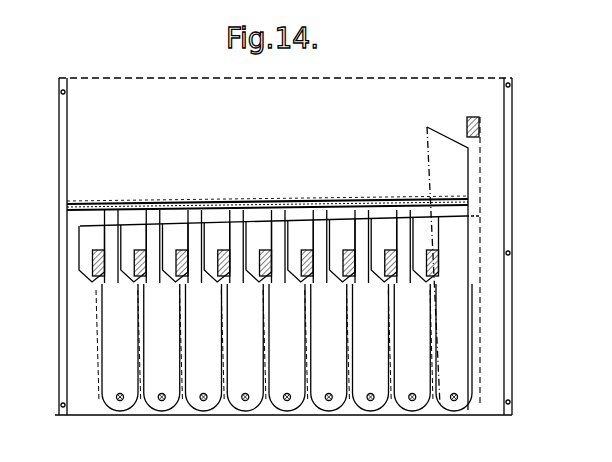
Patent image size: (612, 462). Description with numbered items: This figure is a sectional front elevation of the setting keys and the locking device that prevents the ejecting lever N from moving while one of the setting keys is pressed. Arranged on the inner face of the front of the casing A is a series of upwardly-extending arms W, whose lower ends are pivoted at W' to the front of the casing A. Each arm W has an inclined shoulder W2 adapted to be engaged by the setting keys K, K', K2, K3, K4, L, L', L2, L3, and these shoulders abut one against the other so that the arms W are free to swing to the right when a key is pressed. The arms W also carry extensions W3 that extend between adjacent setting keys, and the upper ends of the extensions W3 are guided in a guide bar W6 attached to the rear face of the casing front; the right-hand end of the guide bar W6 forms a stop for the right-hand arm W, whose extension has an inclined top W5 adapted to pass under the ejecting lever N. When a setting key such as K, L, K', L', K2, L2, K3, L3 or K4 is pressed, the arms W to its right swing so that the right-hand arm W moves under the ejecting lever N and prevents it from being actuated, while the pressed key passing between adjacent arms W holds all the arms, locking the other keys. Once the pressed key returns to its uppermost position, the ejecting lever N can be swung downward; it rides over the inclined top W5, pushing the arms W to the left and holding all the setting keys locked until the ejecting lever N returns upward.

The casing A is at (512, 223).
The ejecting lever N is at (481, 125).
The upwardly-extending arm W is at (317, 347).
The pivot W' is at (343, 284).
The inclined shoulder W2 is at (96, 278).
The extension W3 is at (188, 212).
The inclined top W5 is at (442, 138).
The guide bar W6 is at (298, 214).
The setting key K is at (91, 253).
The setting key L is at (134, 253).
The setting key K' is at (176, 252).
The setting key L' is at (217, 252).
The setting key K2 is at (263, 252).
The setting key L2 is at (305, 252).
The setting key K3 is at (346, 252).
The setting key L3 is at (388, 252).
The setting key K4 is at (430, 252).